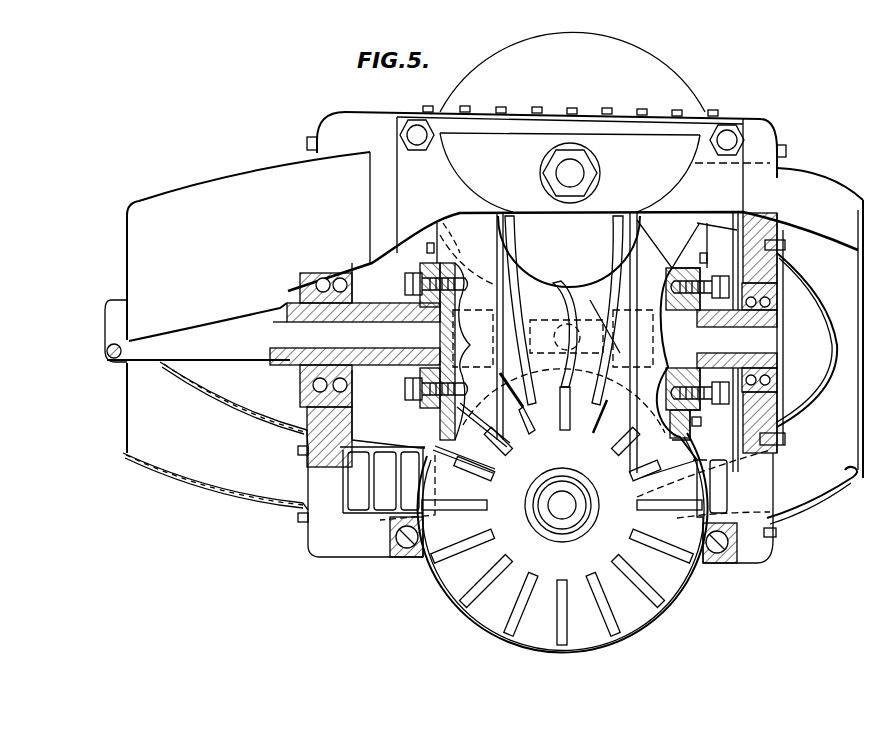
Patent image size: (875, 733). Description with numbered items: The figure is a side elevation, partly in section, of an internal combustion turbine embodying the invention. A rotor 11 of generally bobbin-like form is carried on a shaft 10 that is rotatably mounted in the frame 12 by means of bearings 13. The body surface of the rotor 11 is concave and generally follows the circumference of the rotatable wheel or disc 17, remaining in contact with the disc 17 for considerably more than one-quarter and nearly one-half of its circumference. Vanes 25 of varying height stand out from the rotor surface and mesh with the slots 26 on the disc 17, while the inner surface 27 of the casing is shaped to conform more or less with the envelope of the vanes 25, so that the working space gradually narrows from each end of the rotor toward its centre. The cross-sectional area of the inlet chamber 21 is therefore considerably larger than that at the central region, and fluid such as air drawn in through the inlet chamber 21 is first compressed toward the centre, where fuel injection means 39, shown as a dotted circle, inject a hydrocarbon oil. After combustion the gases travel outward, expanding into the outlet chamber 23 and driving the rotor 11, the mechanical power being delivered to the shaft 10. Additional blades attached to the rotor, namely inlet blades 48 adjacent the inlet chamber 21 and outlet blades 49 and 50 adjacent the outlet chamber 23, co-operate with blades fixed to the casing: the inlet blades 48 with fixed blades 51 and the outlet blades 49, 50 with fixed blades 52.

The shaft 10 is at (240, 357).
The rotor 11 is at (578, 438).
The frame 12 is at (300, 433).
The bearings 13 is at (355, 393).
The rotatable wheel or disc 17 is at (495, 603).
The inlet chamber 21 is at (770, 455).
The outlet chamber 23 is at (287, 487).
The vanes 25 is at (550, 283).
The slots 26 is at (512, 445).
The inner surface of the casing 27 is at (535, 273).
The fuel injection means 39 is at (583, 293).
The inlet blades 48 is at (718, 492).
The outlet blades 49 is at (407, 487).
The outlet blades 50 is at (363, 497).
The fixed blades 51 is at (690, 495).
The fixed blades 52 is at (387, 498).